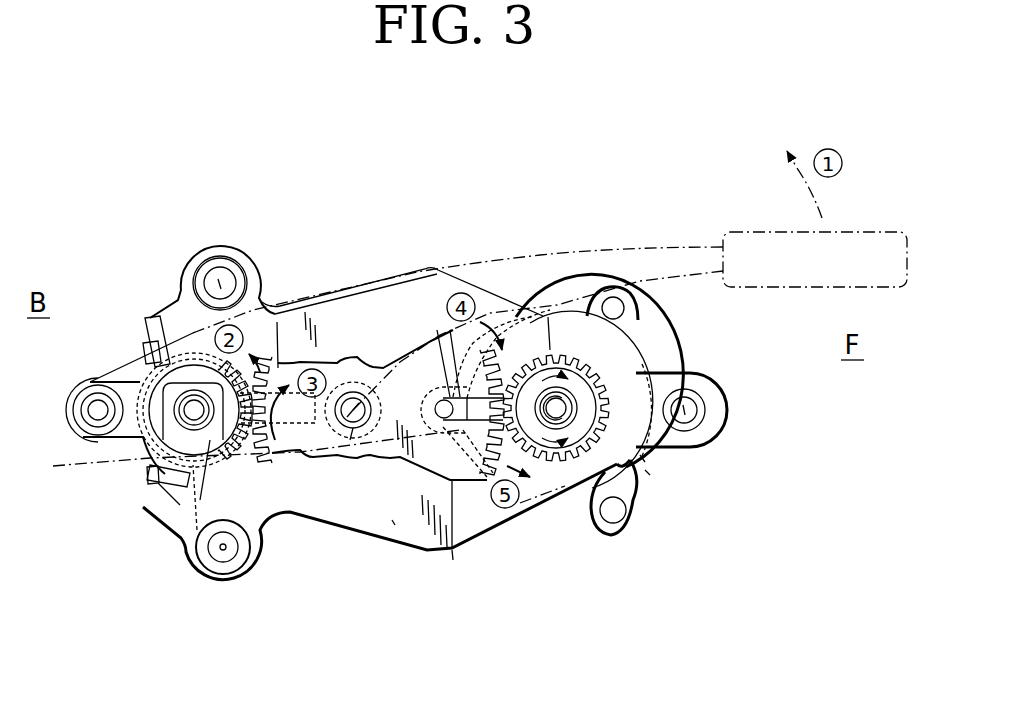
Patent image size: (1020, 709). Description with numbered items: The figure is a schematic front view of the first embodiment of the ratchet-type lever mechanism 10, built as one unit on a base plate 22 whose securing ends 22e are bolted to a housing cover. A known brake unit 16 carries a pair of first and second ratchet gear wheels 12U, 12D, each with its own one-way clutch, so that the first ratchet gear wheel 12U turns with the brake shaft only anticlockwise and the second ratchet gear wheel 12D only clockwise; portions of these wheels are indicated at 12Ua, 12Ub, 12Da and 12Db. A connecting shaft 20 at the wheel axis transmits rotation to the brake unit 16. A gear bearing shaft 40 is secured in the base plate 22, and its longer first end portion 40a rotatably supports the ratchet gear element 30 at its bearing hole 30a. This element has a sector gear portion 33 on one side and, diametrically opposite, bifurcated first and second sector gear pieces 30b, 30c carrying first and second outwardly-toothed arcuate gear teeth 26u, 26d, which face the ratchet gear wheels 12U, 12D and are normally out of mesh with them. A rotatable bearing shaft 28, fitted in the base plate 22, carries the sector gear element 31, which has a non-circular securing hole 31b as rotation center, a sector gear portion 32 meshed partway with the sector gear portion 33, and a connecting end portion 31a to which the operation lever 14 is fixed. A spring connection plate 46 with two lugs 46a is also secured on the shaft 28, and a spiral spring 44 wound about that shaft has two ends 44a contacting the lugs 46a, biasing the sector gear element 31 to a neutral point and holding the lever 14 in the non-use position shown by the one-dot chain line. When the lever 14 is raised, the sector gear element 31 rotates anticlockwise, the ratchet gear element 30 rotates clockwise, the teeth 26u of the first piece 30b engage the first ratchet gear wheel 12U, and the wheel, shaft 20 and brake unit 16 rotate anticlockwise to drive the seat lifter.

The ratchet-type lever mechanism 10 is at (383, 208).
The operation lever 14 is at (655, 262).
The brake unit 16 is at (652, 470).
The connecting shaft 20 is at (648, 458).
The base plate 22 is at (380, 462).
The ends of base plate 22e is at (220, 243).
The first outwardly-toothed arcuate gear teeth 26u is at (522, 345).
The second outwardly-toothed arcuate gear teeth 26d is at (487, 478).
The rotatable bearing shaft 28 is at (185, 450).
The ratchet gear element 30 is at (343, 357).
The bearing hole 30a is at (392, 520).
The first sector gear piece 30b is at (437, 330).
The second sector gear piece 30c is at (452, 550).
The sector gear element 31 is at (200, 500).
The connecting end portion 31a is at (96, 400).
The non-circular securing hole 31b is at (223, 440).
The sector gear portion 32 is at (270, 470).
The sector gear portion 33 is at (277, 322).
The gear bearing shaft 40 is at (363, 390).
The first end portion 40a is at (353, 428).
The spiral spring 44 is at (123, 440).
The ends of spiral spring 44a is at (150, 345).
The spring connection plate 46 is at (190, 470).
The lugs 46a is at (153, 335).
The first ratchet gear wheel 12U is at (573, 475).
The upper gear arm 12Ua is at (633, 470).
The upper gear hub 12Ub is at (597, 473).
The second ratchet gear wheel 12D is at (643, 373).
The lower gear member arc 12Da is at (619, 391).
The lower gear member edge 12Db is at (548, 317).